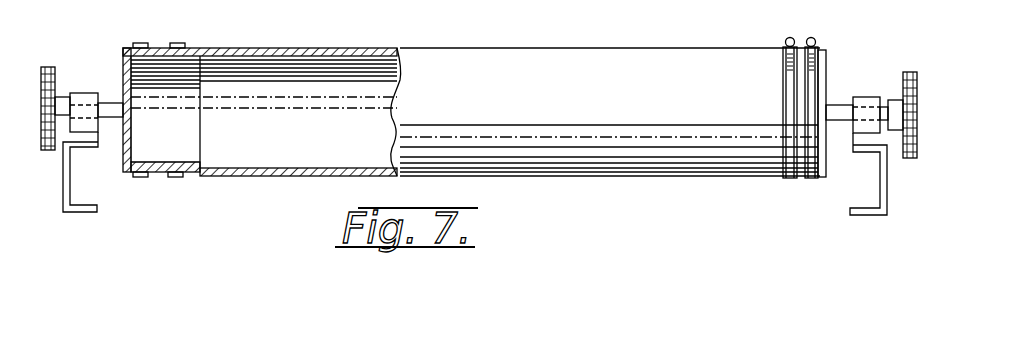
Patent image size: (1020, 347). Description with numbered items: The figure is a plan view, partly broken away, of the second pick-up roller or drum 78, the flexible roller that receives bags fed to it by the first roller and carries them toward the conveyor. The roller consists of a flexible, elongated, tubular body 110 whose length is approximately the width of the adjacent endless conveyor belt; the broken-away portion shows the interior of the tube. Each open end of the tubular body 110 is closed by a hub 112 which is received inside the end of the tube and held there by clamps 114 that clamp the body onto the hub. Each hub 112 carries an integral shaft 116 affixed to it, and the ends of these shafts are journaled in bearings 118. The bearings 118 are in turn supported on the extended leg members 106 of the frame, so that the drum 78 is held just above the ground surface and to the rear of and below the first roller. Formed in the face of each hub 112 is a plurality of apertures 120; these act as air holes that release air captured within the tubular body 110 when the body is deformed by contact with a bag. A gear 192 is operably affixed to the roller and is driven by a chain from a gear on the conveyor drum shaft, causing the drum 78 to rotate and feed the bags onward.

The second pick-up roller 78 is at (585, 50).
The extended leg members 106 is at (67, 180).
The tubular body 110 is at (470, 57).
The hub 112 is at (190, 68).
The clamp 114 is at (173, 44).
The shaft 116 is at (108, 122).
The bearing 118 is at (86, 100).
The apertures 120 is at (131, 70).
The gear 192 is at (46, 152).